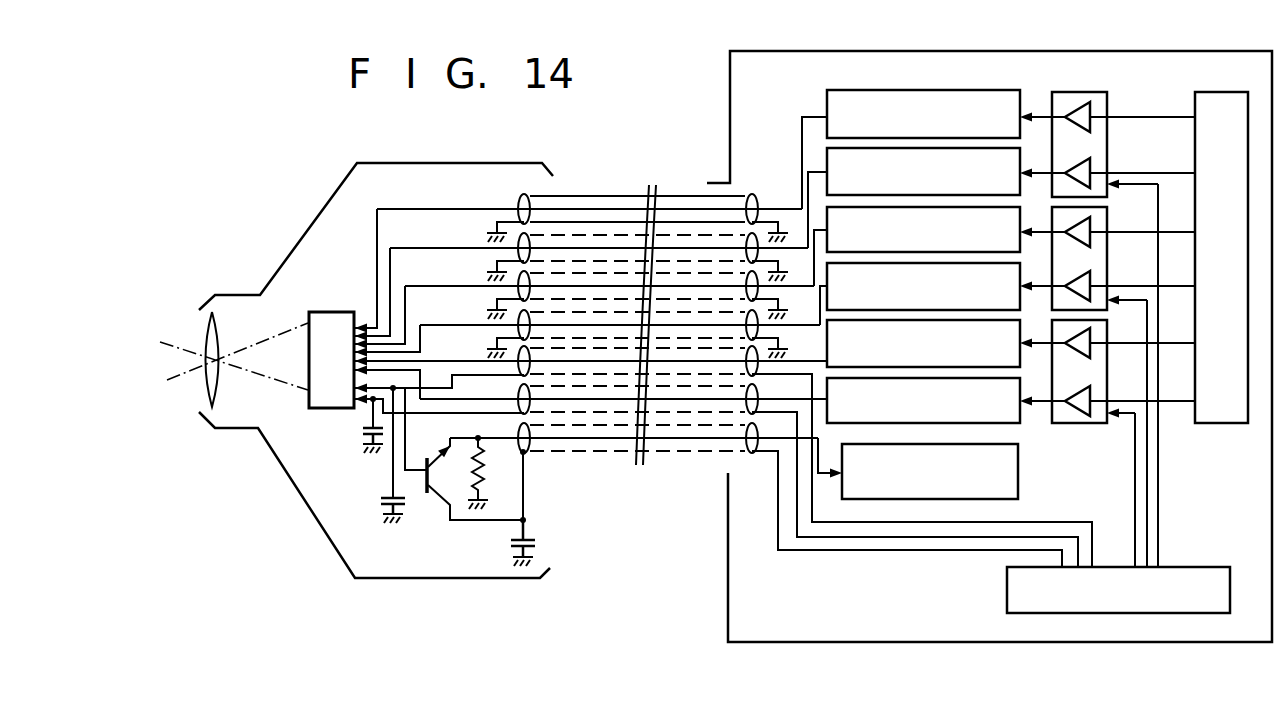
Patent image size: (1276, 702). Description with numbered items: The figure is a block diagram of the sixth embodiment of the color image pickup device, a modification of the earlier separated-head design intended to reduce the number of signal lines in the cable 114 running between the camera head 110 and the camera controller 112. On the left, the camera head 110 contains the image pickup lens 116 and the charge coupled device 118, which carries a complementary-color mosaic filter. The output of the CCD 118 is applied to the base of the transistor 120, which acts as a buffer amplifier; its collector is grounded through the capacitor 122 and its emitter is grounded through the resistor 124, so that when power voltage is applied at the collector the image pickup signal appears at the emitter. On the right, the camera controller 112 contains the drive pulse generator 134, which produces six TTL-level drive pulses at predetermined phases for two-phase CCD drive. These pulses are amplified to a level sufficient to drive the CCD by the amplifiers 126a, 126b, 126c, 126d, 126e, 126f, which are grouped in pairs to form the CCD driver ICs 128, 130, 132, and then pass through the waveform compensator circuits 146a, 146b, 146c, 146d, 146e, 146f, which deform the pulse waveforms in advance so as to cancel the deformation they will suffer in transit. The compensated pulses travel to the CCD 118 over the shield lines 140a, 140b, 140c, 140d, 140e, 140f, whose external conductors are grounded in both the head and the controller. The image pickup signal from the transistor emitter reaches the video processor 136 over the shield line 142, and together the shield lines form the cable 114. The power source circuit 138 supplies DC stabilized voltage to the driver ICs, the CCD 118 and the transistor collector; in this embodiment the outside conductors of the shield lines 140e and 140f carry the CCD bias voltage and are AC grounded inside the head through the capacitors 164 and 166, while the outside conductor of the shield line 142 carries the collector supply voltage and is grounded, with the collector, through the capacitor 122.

The camera head 110 is at (467, 165).
The camera controller 112 is at (1073, 33).
The cable 114 is at (595, 310).
The image pickup lens 116 is at (222, 342).
The charge coupled device (CCD) 118 is at (316, 312).
The transistor 120 is at (438, 503).
The capacitor 122 is at (535, 543).
The resistor 124 is at (482, 478).
The amplifier 126a is at (1089, 104).
The amplifier 126b is at (1094, 164).
The amplifier 126c is at (1092, 232).
The amplifier 126d is at (1092, 280).
The amplifier 126e is at (1092, 355).
The amplifier 126f is at (1088, 417).
The CCD driver IC 128 is at (1101, 128).
The CCD driver IC 130 is at (1109, 247).
The CCD driver IC 132 is at (1139, 400).
The drive pulse generator 134 is at (1193, 92).
The video processor 136 is at (1020, 487).
The power source circuit 138 is at (1187, 551).
The shield line 140a is at (756, 206).
The shield line 140b is at (747, 238).
The shield line 140c is at (761, 297).
The shield line 140d is at (761, 336).
The shield line 140e is at (748, 368).
The shield line 140f is at (752, 413).
The shield line 142 is at (570, 452).
The waveform compensator circuit 146a is at (945, 74).
The waveform compensator circuit 146b is at (825, 157).
The waveform compensator circuit 146c is at (1020, 240).
The waveform compensator circuit 146d is at (1020, 273).
The waveform compensator circuit 146e is at (1020, 351).
The waveform compensator circuit 146f is at (1022, 422).
The capacitor 164 is at (381, 500).
The capacitor 166 is at (362, 430).